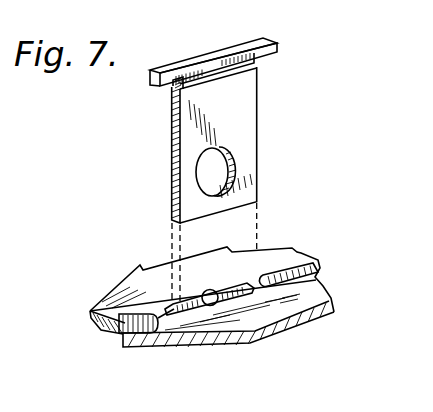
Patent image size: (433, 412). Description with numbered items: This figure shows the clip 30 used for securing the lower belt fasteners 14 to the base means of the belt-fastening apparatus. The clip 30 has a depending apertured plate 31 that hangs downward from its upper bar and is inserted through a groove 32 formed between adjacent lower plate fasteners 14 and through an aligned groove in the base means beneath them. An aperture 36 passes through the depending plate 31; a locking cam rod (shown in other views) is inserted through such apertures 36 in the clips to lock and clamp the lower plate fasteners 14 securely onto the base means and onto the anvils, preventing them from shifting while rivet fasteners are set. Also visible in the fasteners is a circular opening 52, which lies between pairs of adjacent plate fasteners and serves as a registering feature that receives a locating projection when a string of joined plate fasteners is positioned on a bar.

The lower belt fastener 14 is at (215, 294).
The clip 30 is at (217, 170).
The depending apertured plate 31 is at (257, 163).
The groove 32 is at (235, 286).
The aperture 36 is at (212, 164).
The circular opening 52 is at (212, 306).